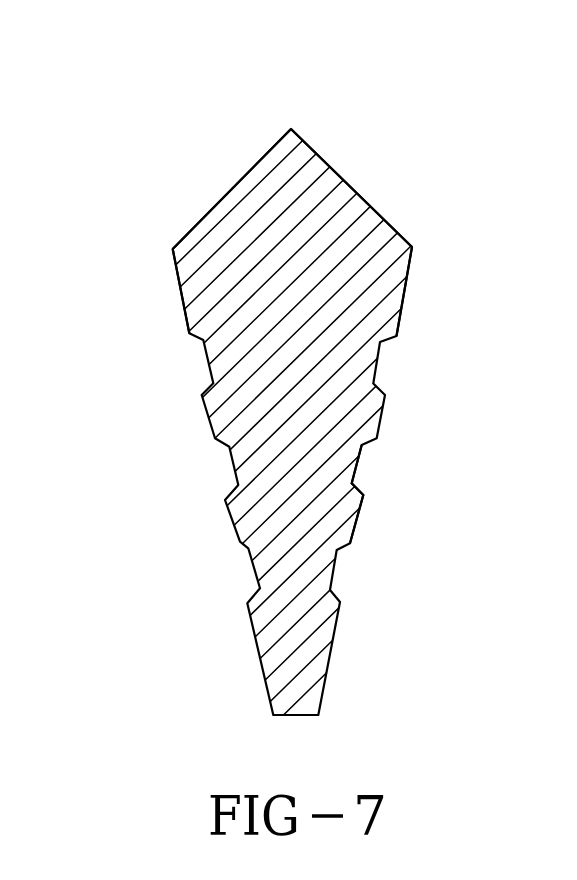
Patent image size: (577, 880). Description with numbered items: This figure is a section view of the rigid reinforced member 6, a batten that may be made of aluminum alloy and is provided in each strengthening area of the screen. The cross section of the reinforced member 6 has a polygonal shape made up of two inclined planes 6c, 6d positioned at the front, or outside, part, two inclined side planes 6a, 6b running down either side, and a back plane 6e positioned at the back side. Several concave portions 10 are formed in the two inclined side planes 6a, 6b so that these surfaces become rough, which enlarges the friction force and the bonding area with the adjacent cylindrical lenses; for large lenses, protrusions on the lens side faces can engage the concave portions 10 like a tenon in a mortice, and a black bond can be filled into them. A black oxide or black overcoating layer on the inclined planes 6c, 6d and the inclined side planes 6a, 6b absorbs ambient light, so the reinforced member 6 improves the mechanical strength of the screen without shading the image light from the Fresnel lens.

The rigid reinforced member 6 is at (362, 195).
The inclined side plane 6a is at (403, 293).
The inclined side plane 6b is at (180, 295).
The inclined plane 6c is at (219, 199).
The inclined plane 6d is at (321, 159).
The back plane 6e is at (293, 715).
The concave portions 10 is at (353, 463).